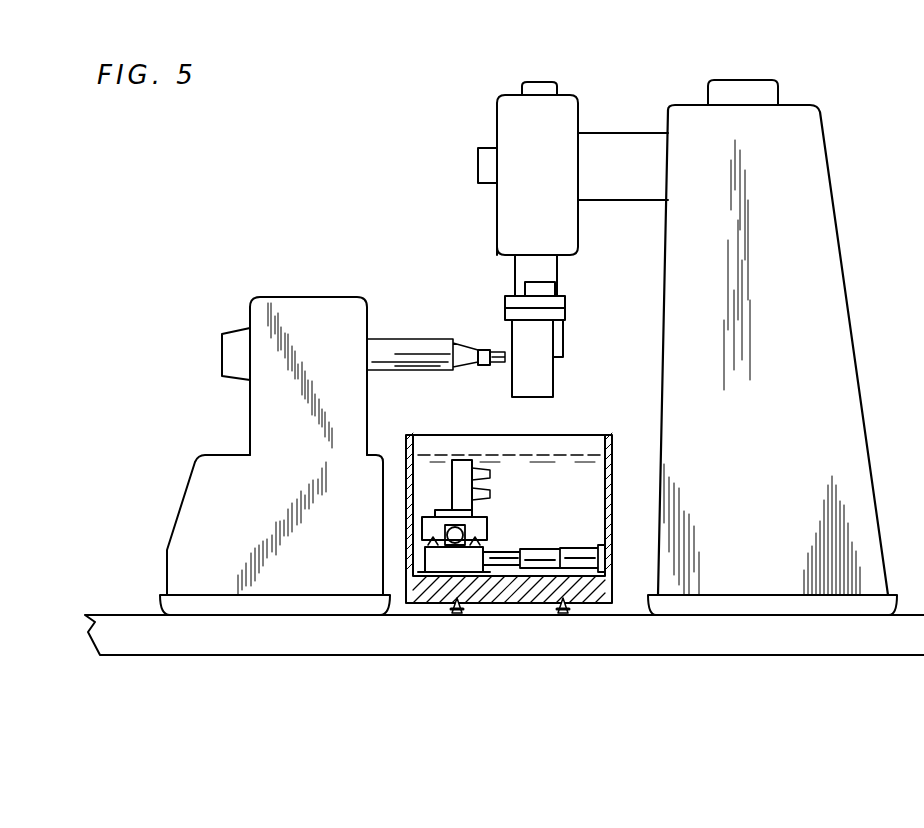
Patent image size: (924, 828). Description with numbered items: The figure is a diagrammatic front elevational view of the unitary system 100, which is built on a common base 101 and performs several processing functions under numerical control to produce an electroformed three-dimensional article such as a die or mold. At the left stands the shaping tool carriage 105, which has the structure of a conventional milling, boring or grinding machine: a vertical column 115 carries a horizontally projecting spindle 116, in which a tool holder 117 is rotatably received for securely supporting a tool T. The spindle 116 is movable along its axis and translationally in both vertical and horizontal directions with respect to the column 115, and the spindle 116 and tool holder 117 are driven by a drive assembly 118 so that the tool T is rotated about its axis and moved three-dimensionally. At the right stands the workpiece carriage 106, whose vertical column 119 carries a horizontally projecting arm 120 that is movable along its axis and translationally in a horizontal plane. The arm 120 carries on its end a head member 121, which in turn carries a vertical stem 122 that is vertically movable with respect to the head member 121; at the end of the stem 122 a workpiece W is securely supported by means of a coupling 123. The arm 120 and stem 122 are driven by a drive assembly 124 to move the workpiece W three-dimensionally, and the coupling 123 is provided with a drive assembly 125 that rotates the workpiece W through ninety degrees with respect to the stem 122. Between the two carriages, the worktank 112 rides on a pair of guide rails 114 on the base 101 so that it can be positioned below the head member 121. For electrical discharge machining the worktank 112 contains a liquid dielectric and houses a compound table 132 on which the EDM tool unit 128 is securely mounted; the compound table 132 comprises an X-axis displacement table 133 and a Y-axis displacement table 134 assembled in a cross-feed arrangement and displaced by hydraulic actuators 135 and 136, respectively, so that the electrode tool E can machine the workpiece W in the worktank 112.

The unitary system 100 is at (352, 174).
The common base 101 is at (775, 642).
The shaping tool carriage 105 is at (240, 297).
The workpiece carriage 106 is at (900, 80).
The worktank 112 is at (481, 598).
The guide rails 114 is at (456, 616).
The vertical column 115 is at (233, 467).
The spindle 116 is at (383, 343).
The tool holder 117 is at (476, 366).
The drive assembly 118 is at (228, 344).
The vertical column 119 is at (735, 115).
The arm 120 is at (618, 140).
The head member 121 is at (527, 100).
The vertical stem 122 is at (518, 268).
The coupling 123 is at (548, 83).
The drive assembly 124 is at (778, 82).
The drive assembly 125 is at (540, 286).
The EDM tool unit 128 is at (458, 462).
The compound table 132 is at (428, 507).
The X-axis displacement table 133 is at (437, 566).
The Y-axis displacement table 134 is at (487, 527).
The hydraulic actuator 135 is at (578, 552).
The hydraulic actuator 136 is at (442, 527).
The tool T is at (492, 355).
The workpiece W is at (514, 337).
The electrode tool E is at (493, 487).